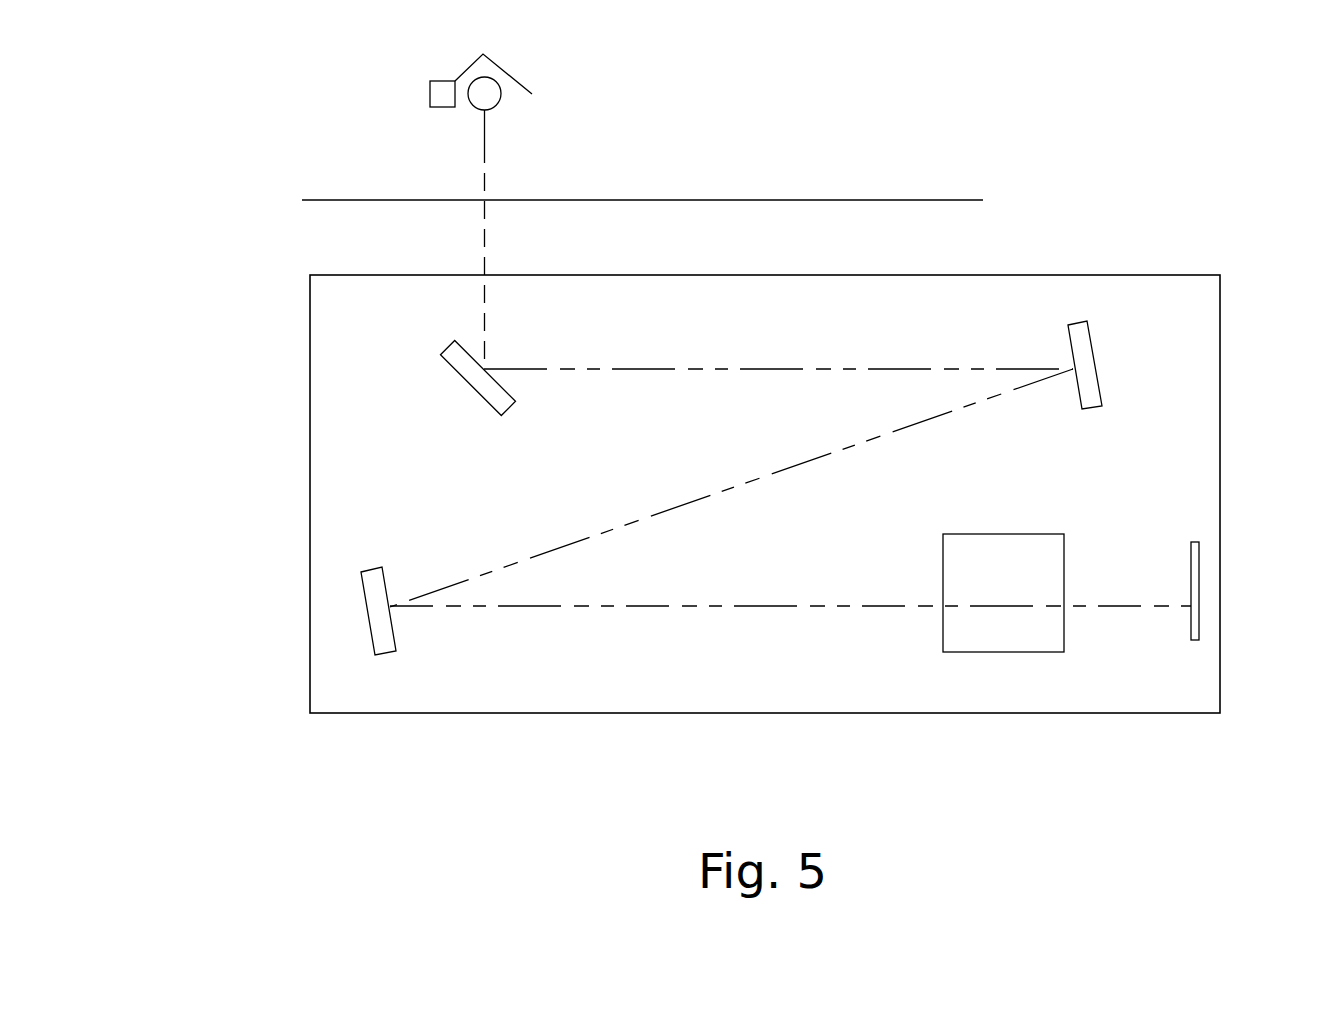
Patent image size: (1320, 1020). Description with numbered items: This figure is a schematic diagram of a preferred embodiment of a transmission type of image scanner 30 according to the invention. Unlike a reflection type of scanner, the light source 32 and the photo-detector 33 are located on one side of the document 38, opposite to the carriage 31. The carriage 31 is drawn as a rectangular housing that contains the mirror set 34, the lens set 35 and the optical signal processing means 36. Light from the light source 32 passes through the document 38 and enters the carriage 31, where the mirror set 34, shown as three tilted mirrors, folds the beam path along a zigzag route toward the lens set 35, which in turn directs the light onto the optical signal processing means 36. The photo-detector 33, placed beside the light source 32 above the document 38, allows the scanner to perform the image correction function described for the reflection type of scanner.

The transmission type of image scanner 30 is at (1030, 256).
The carriage 31 is at (893, 713).
The light source 32 is at (487, 92).
The photo-detector 33 is at (443, 98).
The mirror set 34 is at (467, 367).
The lens set 35 is at (1012, 628).
The optical signal processing means 36 is at (1195, 577).
The document 38 is at (858, 199).